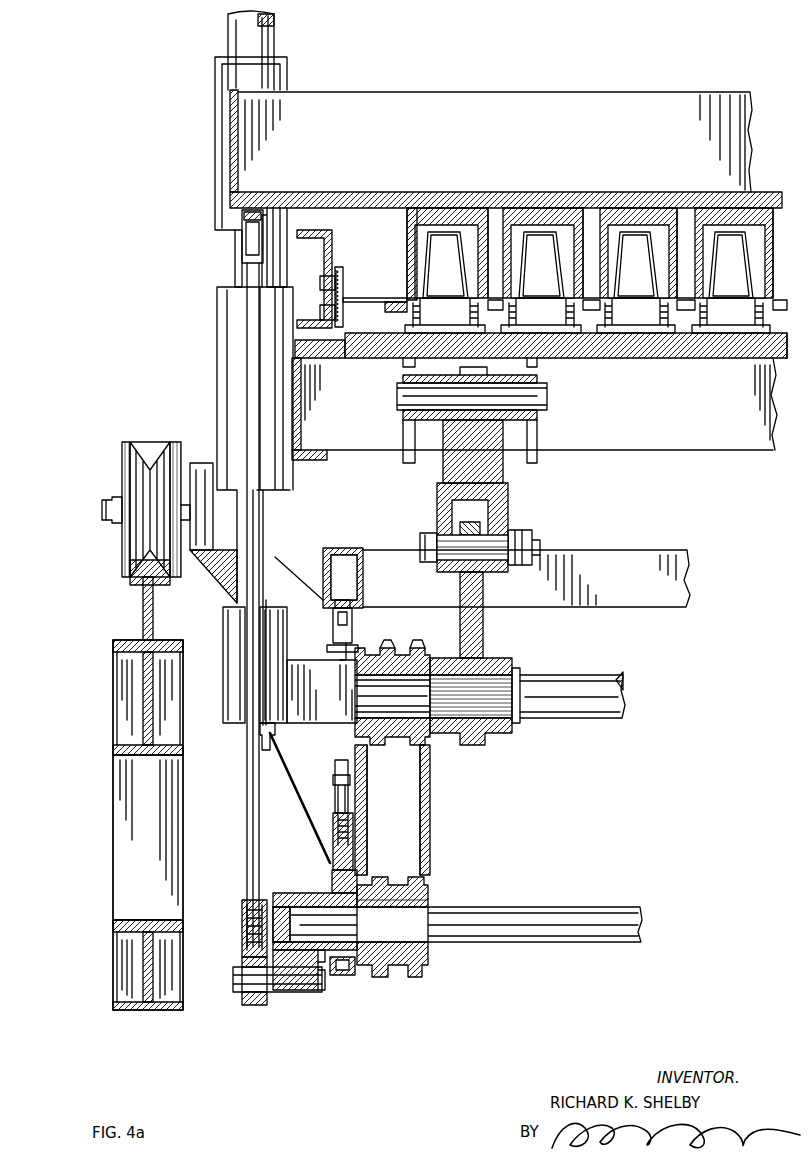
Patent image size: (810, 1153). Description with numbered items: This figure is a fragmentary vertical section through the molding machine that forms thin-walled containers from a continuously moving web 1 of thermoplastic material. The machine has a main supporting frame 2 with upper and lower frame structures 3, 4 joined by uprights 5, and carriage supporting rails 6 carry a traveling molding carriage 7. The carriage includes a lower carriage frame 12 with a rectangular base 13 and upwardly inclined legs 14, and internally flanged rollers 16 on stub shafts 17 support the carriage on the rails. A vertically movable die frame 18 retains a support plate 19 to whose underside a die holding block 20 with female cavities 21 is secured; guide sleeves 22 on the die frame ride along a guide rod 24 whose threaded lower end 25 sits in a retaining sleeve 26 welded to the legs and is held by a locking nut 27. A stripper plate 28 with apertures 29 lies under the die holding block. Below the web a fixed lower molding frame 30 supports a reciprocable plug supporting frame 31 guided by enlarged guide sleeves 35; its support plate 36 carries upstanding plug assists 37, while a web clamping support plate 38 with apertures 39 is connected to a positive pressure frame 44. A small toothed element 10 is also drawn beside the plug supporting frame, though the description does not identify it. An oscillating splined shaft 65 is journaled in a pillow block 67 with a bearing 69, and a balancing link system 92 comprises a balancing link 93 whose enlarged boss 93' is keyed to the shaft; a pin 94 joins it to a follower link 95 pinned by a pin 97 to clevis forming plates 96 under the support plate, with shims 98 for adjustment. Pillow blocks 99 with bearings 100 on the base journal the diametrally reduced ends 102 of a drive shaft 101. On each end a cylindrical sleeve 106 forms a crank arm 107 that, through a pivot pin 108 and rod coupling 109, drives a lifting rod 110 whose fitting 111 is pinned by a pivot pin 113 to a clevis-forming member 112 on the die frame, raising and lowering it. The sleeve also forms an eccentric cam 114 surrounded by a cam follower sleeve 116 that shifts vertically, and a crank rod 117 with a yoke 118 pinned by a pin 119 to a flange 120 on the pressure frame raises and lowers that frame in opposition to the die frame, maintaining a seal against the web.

The web of thermoplastic material 1 is at (360, 290).
The main supporting frame 2 is at (110, 890).
The upper frame structure 3 is at (113, 710).
The lower frame structure 4 is at (113, 965).
The uprights 5 is at (113, 845).
The carriage supporting rails 6 is at (143, 620).
The molding carriage 7 is at (430, 820).
The rack 10 is at (345, 275).
The lower carriage frame 12 is at (430, 790).
The base 13 is at (430, 858).
The legs 14 is at (200, 465).
The flanged rollers 16 is at (125, 440).
The stub shafts 17 is at (100, 510).
The die frame 18 is at (498, 92).
The support plate 19 is at (352, 190).
The die holding block 20 is at (527, 215).
The cavities 21 is at (567, 250).
The guide sleeves 22 is at (215, 85).
The guide rod 24 is at (277, 40).
The threaded lower end 25 is at (262, 760).
The retaining sleeve 26 is at (223, 700).
The locking nut 27 is at (238, 748).
The stripper plate 28 is at (738, 358).
The apertures 29 is at (602, 320).
The lower molding frame 30 is at (680, 455).
The plug supporting frame 31 is at (357, 358).
The guide sleeves 35 is at (217, 382).
The support plate 36 is at (393, 358).
The plug assists 37 is at (635, 250).
The web clamping support plate 38 is at (385, 306).
The apertures 39 is at (407, 290).
The positive pressure frame 44 is at (680, 552).
The splined shaft 65 is at (615, 675).
The pillow block 67 is at (428, 655).
The bearing 69 is at (395, 655).
The balancing link system 92 is at (483, 640).
The balancing link 93 is at (478, 689).
The enlarged boss 93' is at (545, 678).
The pin 94 is at (540, 545).
The follower link 95 is at (508, 455).
The clevis forming plates 96 is at (537, 440).
The pin 97 is at (547, 388).
The shims 98 is at (437, 500).
The pillow blocks 99 is at (430, 890).
The bearings 100 is at (425, 960).
The drive shaft 101 is at (615, 910).
The diametrally reduced ends 102 is at (310, 900).
The cylindrical sleeve 106 is at (290, 895).
The crank arm 107 is at (300, 975).
The pivot pin 108 is at (233, 975).
The rod coupling 109 is at (260, 1000).
The lifting rod 110 is at (250, 826).
The fitting 111 is at (253, 240).
The clevis-forming member 112 is at (240, 228).
The pivot pin 113 is at (238, 245).
The cam 114 is at (345, 975).
The cam follower sleeve 116 is at (333, 828).
The crank rod 117 is at (335, 803).
The yoke 118 is at (352, 640).
The pin 119 is at (352, 628).
The flange 120 is at (333, 625).